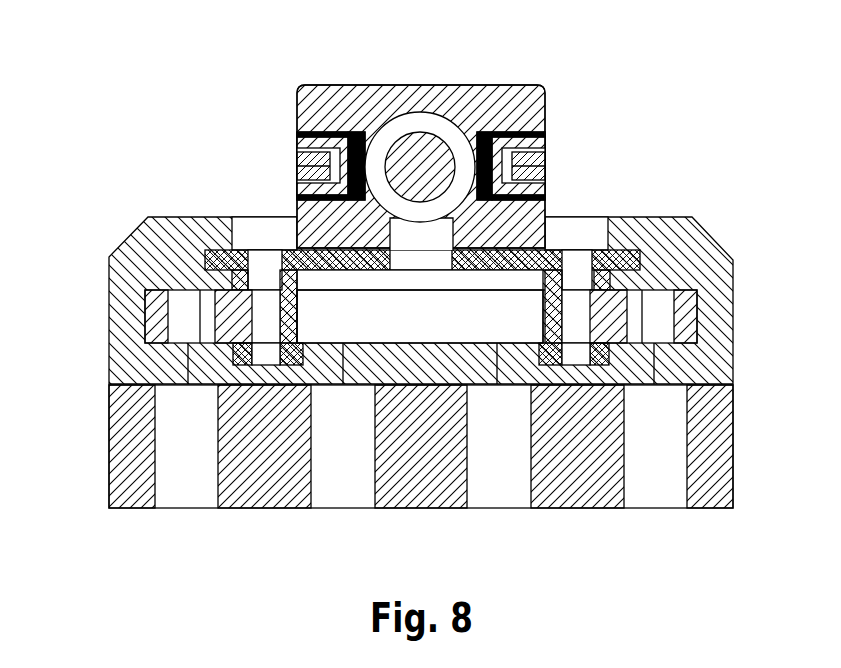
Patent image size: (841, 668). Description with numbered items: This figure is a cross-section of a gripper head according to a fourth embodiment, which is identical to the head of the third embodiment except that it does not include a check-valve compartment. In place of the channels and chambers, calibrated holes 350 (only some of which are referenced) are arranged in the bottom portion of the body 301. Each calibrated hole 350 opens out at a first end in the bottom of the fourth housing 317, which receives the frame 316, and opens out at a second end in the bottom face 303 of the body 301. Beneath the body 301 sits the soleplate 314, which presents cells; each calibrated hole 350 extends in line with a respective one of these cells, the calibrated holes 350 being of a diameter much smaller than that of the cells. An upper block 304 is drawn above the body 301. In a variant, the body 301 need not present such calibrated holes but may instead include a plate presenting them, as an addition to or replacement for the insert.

The body 301 is at (109, 372).
The bottom face 303 is at (710, 386).
The upper bearing block 304 is at (455, 84).
The soleplate 314 is at (109, 450).
The frame 316 is at (213, 325).
The fourth housing 317 is at (697, 318).
The calibrated holes 350 is at (497, 362).